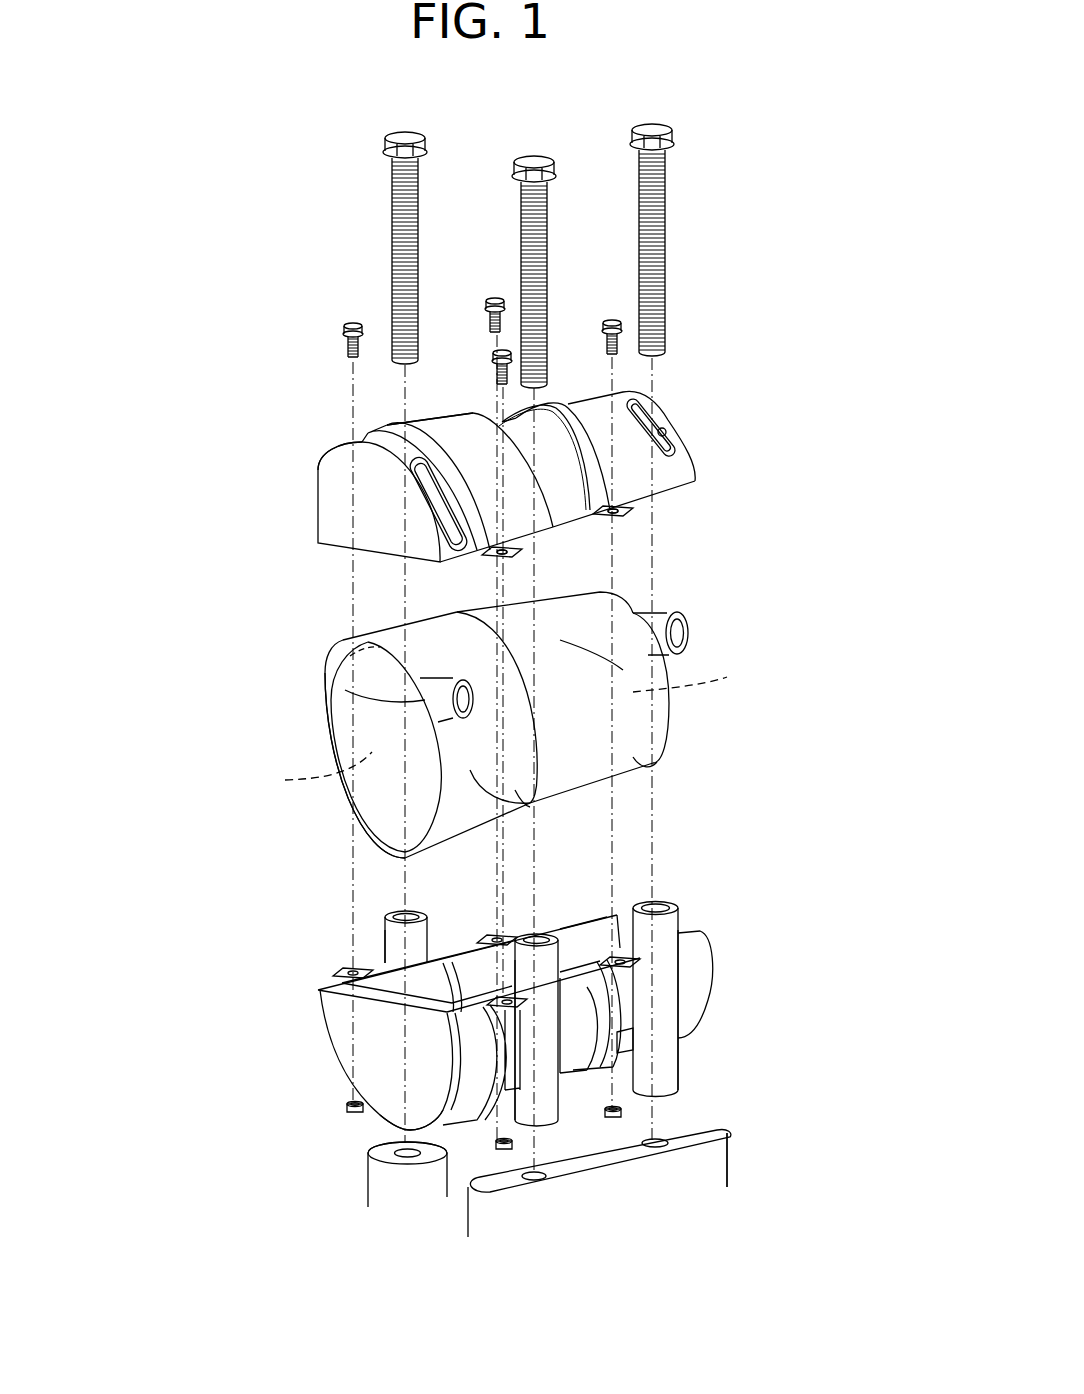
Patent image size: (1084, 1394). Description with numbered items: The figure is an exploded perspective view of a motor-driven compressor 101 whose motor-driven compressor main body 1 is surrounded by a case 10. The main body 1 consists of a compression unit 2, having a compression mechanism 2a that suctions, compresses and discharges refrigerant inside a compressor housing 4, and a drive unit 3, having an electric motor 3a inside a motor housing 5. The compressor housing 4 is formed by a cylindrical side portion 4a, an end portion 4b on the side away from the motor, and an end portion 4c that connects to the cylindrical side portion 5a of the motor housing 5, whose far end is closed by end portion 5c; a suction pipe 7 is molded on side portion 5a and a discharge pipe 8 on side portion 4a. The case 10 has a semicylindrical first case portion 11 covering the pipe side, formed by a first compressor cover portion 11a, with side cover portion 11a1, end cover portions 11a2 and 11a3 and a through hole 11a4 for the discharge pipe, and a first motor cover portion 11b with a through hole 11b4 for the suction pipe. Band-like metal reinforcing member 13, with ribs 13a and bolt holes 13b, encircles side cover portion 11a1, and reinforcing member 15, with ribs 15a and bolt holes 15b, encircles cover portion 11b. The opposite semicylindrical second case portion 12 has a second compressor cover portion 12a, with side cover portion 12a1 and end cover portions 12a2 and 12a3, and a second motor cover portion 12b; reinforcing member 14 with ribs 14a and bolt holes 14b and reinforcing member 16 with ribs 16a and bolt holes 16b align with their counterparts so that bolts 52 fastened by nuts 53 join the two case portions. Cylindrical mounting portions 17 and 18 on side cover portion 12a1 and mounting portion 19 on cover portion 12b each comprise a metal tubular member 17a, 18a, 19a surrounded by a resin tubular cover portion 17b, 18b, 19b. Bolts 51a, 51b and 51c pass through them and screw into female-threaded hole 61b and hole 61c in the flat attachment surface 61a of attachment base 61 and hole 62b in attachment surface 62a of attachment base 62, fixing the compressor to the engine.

The motor-driven compressor 101 is at (248, 365).
The motor-driven compressor main body 1 is at (325, 683).
The compression unit 2 is at (360, 708).
The compression mechanism 2a is at (312, 771).
The drive unit 3 is at (623, 670).
The electric motor 3a is at (696, 675).
The compressor housing 4 is at (418, 756).
The cylindrical side portion 4a is at (445, 835).
The end portion 4b is at (382, 783).
The end portion 4c is at (530, 807).
The motor housing 5 is at (623, 697).
The cylindrical side portion 5a is at (640, 760).
The end portion 5c is at (665, 735).
The suction pipe 7 is at (690, 622).
The discharge pipe 8 is at (440, 722).
The case 10 is at (493, 798).
The first case portion 11 is at (322, 463).
The first compressor cover portion 11a is at (411, 491).
The side cover portion 11a1 is at (453, 428).
The end cover portion 11a2 is at (348, 532).
The end cover portion 11a3 is at (553, 528).
The through hole 11a4 is at (440, 498).
The first motor cover portion 11b is at (678, 449).
The through hole 11b4 is at (662, 432).
The second case portion 12 is at (318, 1017).
The second compressor cover portion 12a is at (414, 1061).
The side cover portion 12a1 is at (405, 1125).
The end cover portion 12a2 is at (373, 1063).
The end cover portion 12a3 is at (566, 1080).
The second motor cover portion 12b is at (700, 963).
The reinforcing member 13 is at (406, 484).
The rib 13a is at (495, 553).
The bolt hole 13b is at (500, 559).
The reinforcing member 14 is at (370, 1097).
The rib 14a is at (340, 974).
The bolt hole 14b is at (485, 942).
The reinforcing member 15 is at (633, 451).
The rib 15a is at (631, 511).
The bolt hole 15b is at (617, 516).
The reinforcing member 16 is at (629, 1014).
The rib 16a is at (635, 968).
The bolt hole 16b is at (635, 972).
The cylindrical mounting portion 17 is at (641, 969).
The tubular member 17a is at (548, 932).
The tubular cover portion 17b is at (560, 945).
The cylindrical mounting portion 18 is at (315, 909).
The tubular member 18a is at (398, 912).
The tubular cover portion 18b is at (398, 958).
The cylindrical mounting portion 19 is at (738, 980).
The tubular member 19a is at (678, 908).
The tubular cover portion 19b is at (680, 917).
The bolt 51a is at (514, 170).
The bolt 51b is at (390, 147).
The bolt 51c is at (673, 132).
The bolt 52 is at (353, 323).
The nut 53 is at (348, 1108).
The attachment base 61 is at (647, 1199).
The attachment surface 61a is at (727, 1133).
The female-threaded hole 61b is at (535, 1181).
The female-threaded hole 61c is at (655, 1148).
The attachment base 62 is at (358, 1197).
The attachment surface 62a is at (395, 1153).
The female-threaded hole 62b is at (418, 1157).